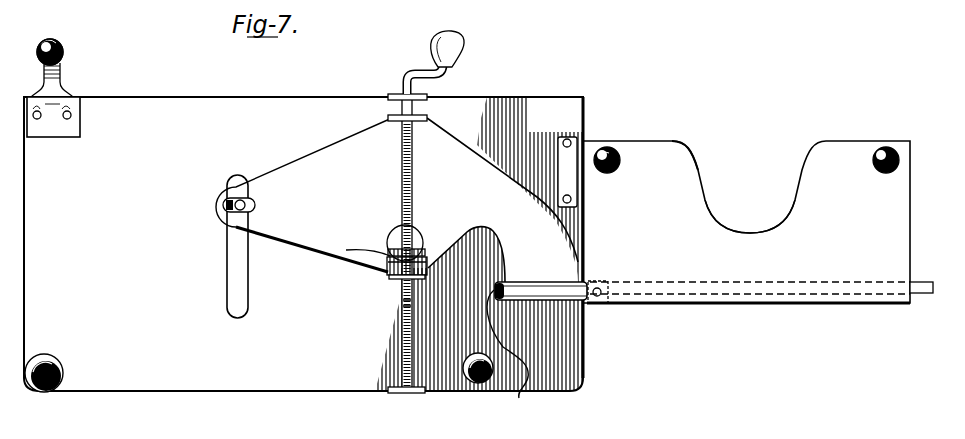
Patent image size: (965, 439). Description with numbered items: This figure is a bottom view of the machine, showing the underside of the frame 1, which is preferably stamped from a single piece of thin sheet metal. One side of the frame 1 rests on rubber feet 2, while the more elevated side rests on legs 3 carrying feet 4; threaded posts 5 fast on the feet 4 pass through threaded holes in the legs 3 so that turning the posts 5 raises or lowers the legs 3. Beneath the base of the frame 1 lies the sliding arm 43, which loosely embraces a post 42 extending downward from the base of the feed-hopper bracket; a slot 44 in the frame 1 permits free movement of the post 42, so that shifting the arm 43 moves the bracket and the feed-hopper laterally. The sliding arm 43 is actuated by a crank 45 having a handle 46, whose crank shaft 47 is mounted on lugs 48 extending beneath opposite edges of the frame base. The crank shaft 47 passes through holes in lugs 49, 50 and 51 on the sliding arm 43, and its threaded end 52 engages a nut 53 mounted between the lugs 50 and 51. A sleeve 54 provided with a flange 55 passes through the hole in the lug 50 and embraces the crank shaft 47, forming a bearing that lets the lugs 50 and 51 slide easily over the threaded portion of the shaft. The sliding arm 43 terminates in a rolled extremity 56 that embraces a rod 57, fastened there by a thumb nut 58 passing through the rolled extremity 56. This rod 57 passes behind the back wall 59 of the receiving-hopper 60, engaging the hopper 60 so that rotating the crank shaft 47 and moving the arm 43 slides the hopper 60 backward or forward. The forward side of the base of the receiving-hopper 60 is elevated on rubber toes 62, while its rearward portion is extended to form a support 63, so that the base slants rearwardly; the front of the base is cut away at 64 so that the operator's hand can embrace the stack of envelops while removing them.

The frame 1 is at (303, 244).
The rubber feet 2 is at (42, 394).
The legs 3 is at (61, 82).
The feet 4 is at (63, 52).
The threaded posts 5 is at (58, 41).
The post 42 is at (256, 203).
The sliding arm 43 is at (294, 246).
The slot 44 is at (230, 283).
The crank 45 is at (411, 78).
The handle 46 is at (442, 35).
The crank shaft 47 is at (402, 172).
The lugs 48 is at (428, 98).
The lug 49 is at (421, 124).
The lug 50 is at (389, 252).
The lug 51 is at (395, 279).
The threaded end 52 is at (403, 310).
The nut 53 is at (392, 270).
The sleeve 54 is at (397, 238).
The flange 55 is at (356, 247).
The rolled extremity 56 is at (541, 282).
The rod 57 is at (513, 352).
The thumb nut 58 is at (598, 306).
The back wall 59 is at (771, 304).
The receiving-hopper 60 is at (678, 157).
The rubber toes 62 is at (609, 173).
The support 63 is at (887, 173).
The cut away 64 is at (750, 213).